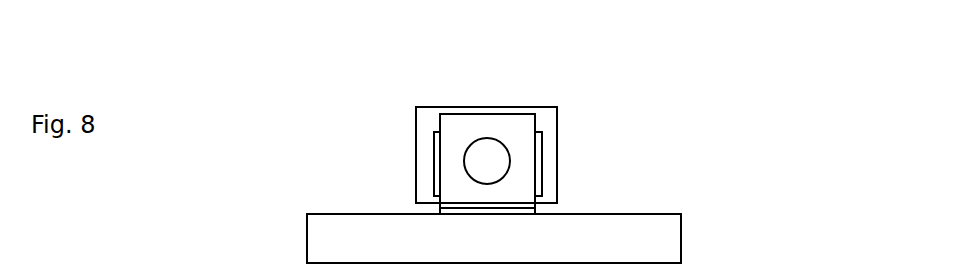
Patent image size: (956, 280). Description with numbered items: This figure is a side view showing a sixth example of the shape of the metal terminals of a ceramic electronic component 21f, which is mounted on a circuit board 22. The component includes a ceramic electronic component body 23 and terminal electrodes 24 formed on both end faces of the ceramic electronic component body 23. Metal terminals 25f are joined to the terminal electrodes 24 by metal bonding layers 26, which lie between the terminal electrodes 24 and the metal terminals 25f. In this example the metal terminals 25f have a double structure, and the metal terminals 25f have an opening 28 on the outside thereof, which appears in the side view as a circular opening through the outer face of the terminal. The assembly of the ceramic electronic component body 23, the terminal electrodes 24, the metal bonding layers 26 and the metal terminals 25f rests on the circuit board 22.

The ceramic electronic component 21f is at (331, 76).
The circuit board 22 is at (673, 238).
The ceramic electronic component body 23 is at (549, 107).
The terminal electrode 24 is at (430, 114).
The metal terminal 25f is at (447, 151).
The metal bonding layer 26 is at (537, 164).
The opening 28 is at (488, 138).